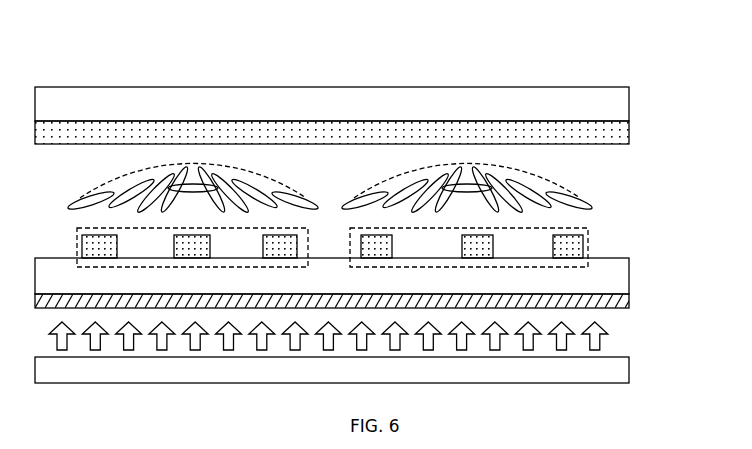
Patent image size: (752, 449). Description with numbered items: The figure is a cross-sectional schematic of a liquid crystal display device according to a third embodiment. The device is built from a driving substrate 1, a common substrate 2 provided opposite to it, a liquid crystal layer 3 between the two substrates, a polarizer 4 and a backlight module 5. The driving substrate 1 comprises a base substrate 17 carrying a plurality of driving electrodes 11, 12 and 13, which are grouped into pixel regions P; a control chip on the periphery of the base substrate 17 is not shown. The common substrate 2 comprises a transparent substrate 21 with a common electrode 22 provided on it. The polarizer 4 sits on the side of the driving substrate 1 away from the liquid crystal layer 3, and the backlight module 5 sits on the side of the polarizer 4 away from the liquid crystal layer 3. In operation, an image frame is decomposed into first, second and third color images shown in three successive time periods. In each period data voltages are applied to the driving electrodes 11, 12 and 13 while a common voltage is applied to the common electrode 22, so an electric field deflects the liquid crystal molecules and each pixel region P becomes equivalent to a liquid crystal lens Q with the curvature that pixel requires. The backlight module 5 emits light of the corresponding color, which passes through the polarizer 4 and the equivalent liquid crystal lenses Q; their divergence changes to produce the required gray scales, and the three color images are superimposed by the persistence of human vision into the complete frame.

The driving substrate 1 is at (372, 283).
The common substrate 2 is at (374, 116).
The liquid crystal layer 3 is at (548, 189).
The polarizer 4 is at (332, 298).
The backlight module 5 is at (580, 369).
The driving electrode 11 is at (380, 247).
The driving electrode 12 is at (478, 242).
The driving electrode 13 is at (583, 243).
The base substrate 17 is at (567, 280).
The transparent substrate 21 is at (573, 104).
The common electrode 22 is at (570, 136).
The pixel region P is at (588, 228).
The liquid crystal lens Q is at (547, 177).